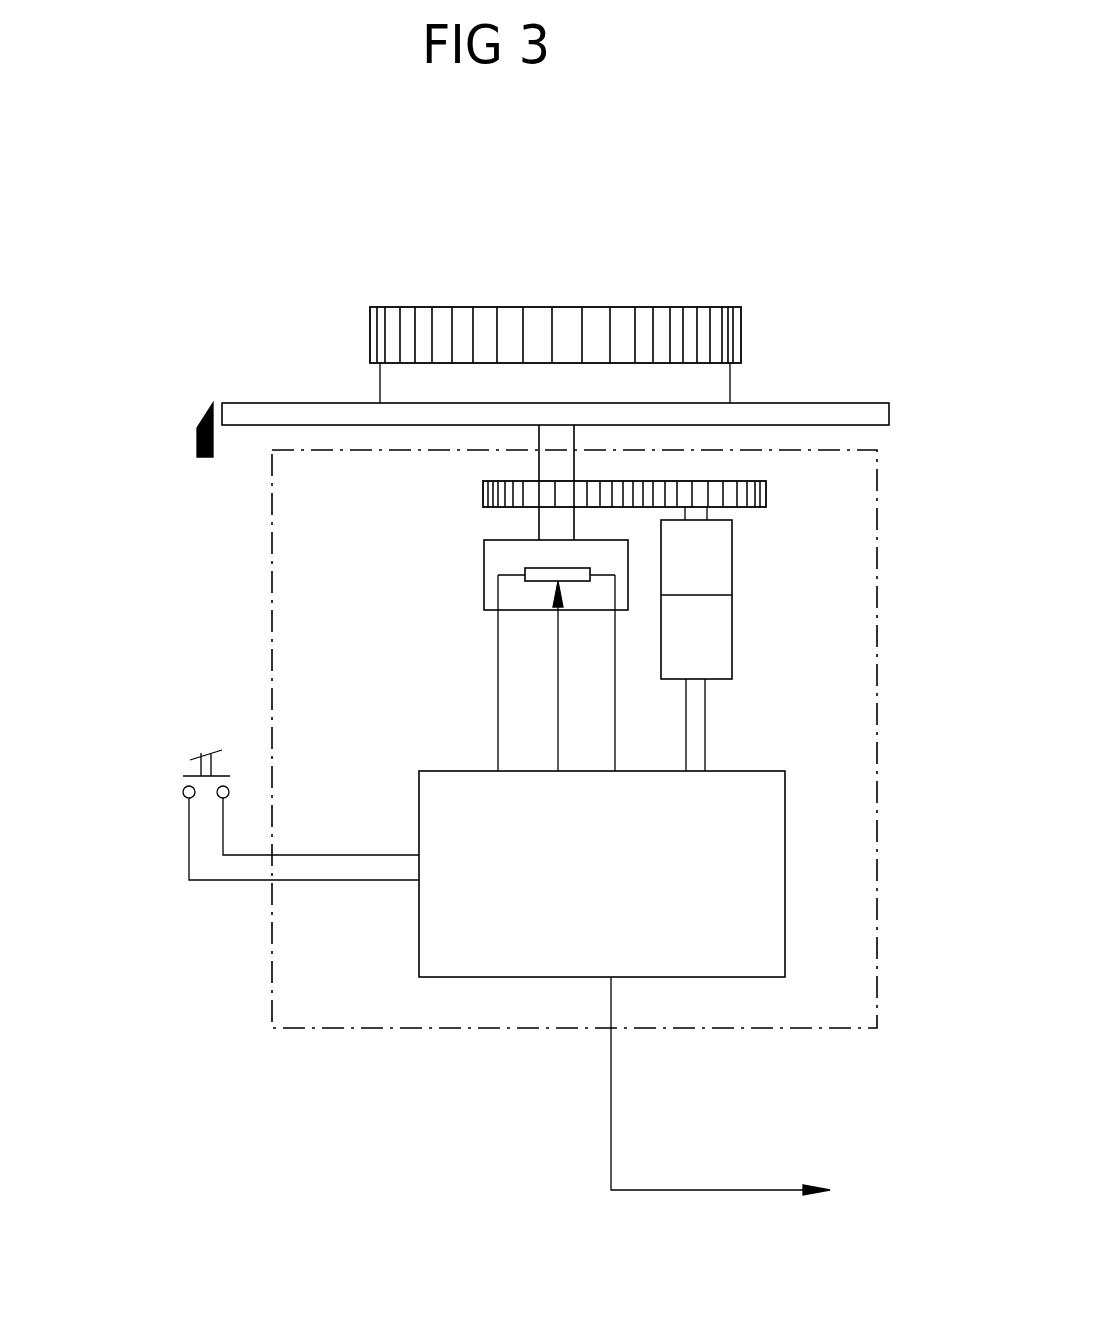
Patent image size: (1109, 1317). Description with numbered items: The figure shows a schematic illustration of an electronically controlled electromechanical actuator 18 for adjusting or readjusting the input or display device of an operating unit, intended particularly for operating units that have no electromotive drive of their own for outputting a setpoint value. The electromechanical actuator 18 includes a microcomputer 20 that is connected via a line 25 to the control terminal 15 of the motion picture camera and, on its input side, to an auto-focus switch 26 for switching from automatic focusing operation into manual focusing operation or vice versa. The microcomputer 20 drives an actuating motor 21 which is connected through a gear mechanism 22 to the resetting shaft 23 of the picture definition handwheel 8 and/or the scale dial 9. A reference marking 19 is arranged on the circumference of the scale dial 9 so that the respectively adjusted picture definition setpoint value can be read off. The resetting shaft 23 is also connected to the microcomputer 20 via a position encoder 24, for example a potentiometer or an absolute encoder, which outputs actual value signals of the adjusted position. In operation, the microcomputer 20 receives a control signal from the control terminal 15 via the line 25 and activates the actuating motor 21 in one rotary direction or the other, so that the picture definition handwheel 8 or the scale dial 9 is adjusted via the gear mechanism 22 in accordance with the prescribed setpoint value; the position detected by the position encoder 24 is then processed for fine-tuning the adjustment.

The picture definition handwheel 8 is at (662, 318).
The scale dial 9 is at (837, 415).
The control terminal 15 is at (841, 1193).
The electromechanical actuator 18 is at (843, 713).
The reference marking 19 is at (197, 457).
The microcomputer 20 is at (745, 849).
The actuating motor 21 is at (712, 640).
The gear mechanism 22 is at (767, 496).
The resetting shaft 23 is at (548, 432).
The position encoder 24 is at (483, 563).
The line 25 is at (611, 1076).
The auto-focus switch 26 is at (175, 788).